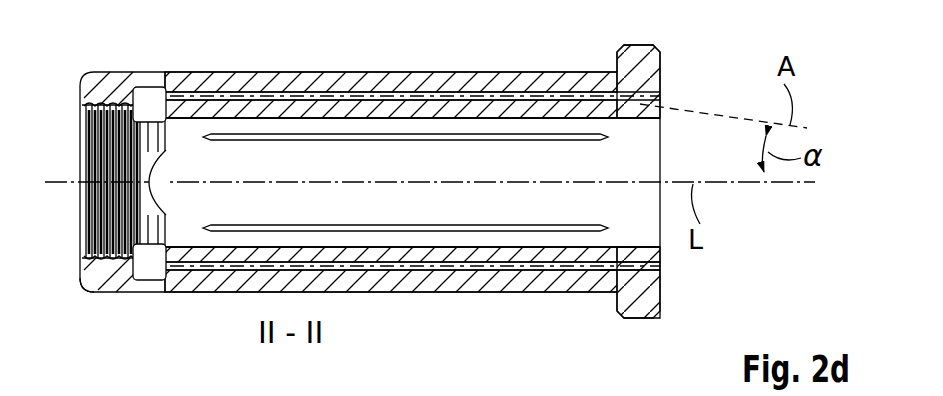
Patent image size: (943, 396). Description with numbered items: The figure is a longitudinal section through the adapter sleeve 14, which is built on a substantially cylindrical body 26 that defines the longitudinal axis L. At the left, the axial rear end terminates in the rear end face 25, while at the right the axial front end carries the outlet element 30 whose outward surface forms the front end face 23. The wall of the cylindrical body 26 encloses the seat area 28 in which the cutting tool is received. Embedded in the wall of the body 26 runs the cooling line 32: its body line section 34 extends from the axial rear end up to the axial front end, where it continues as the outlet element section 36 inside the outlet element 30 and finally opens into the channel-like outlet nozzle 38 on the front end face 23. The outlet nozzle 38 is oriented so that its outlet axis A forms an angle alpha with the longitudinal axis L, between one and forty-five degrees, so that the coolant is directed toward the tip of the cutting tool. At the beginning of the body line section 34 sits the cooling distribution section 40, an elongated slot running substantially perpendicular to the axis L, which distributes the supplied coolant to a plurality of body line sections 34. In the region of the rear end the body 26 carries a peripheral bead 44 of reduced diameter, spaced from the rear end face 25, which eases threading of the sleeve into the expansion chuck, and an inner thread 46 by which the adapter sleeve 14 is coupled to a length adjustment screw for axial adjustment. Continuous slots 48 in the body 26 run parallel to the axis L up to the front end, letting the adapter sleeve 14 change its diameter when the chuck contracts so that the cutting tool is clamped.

The adapter sleeve 14 is at (337, 68).
The front end face 23 is at (668, 299).
The rear end face 25 is at (75, 283).
The cylindrical body 26 is at (258, 92).
The seat area 28 is at (577, 158).
The outlet element 30 is at (651, 72).
The cooling line 32 is at (403, 94).
The body line section 34 is at (462, 102).
The outlet element section 36 is at (641, 104).
The outlet nozzle 38 is at (676, 261).
The cooling distribution section 40 is at (153, 92).
The bead 44 is at (112, 90).
The inner thread 46 is at (112, 270).
The continuous slot 48 is at (509, 134).